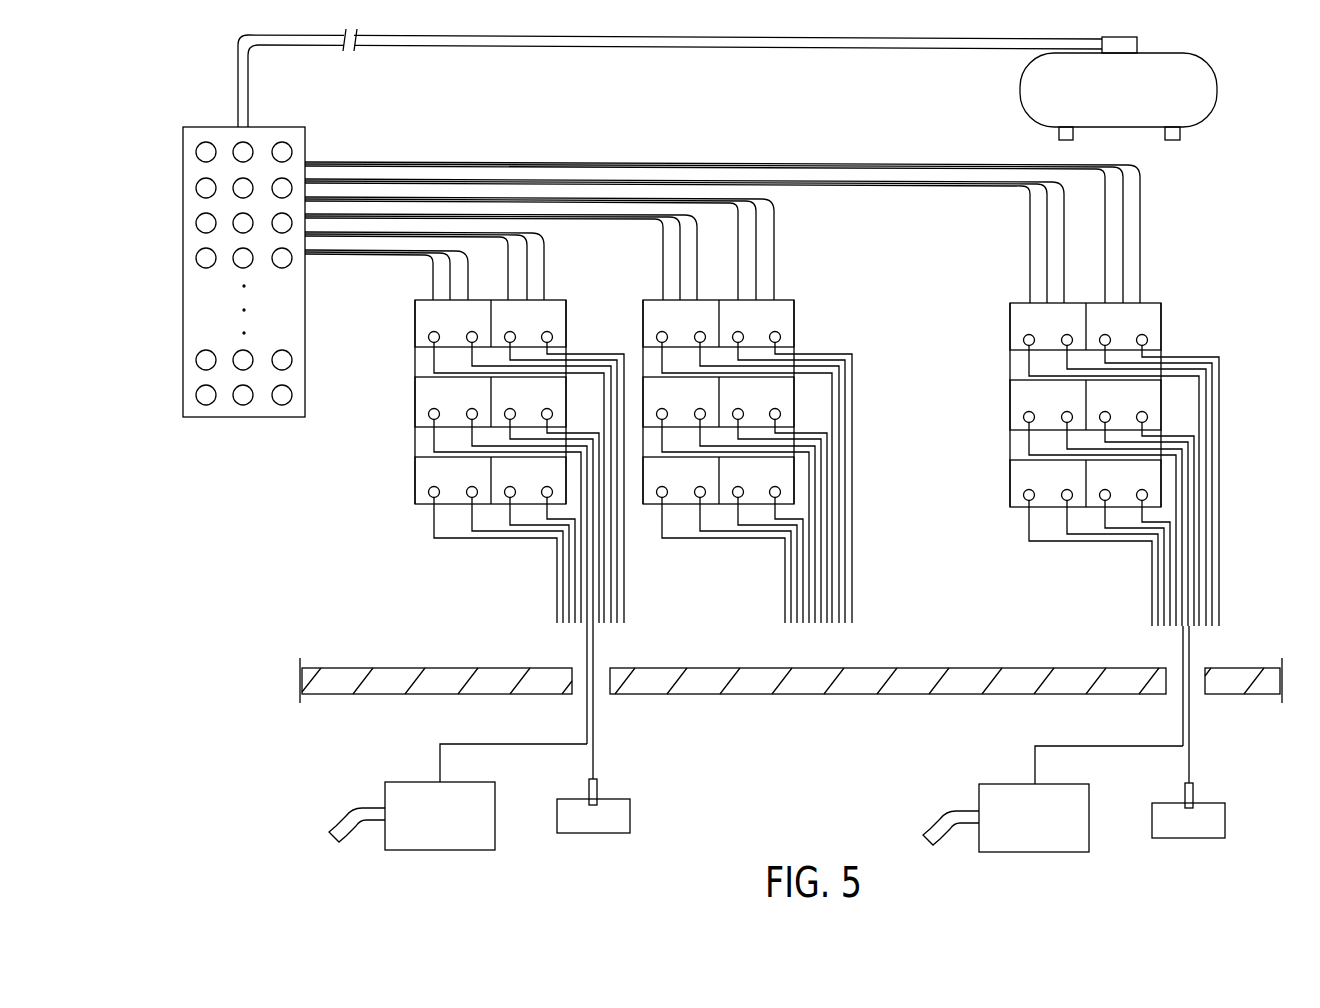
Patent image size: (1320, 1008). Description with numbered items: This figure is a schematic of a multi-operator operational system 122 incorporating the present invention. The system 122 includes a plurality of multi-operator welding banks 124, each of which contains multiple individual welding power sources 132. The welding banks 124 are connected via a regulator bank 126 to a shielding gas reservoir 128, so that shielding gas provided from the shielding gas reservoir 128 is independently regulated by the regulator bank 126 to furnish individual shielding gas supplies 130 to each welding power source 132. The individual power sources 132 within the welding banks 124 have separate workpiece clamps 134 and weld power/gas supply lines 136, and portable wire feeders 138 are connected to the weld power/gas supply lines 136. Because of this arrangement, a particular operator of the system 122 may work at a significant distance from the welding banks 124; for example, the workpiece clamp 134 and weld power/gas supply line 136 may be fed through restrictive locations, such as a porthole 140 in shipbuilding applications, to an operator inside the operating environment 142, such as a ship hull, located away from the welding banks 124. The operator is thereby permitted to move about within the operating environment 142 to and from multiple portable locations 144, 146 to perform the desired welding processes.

The multi-operator operational system 122 is at (1264, 357).
The multi-operator welding bank 124 is at (582, 347).
The regulator bank 126 is at (183, 273).
The shielding gas reservoir 128 is at (1217, 93).
The shielding gas supply 130 is at (450, 285).
The welding power source 132 is at (553, 310).
The workpiece clamp 134 is at (600, 792).
The weld power/gas supply line 136 is at (480, 743).
The portable wire feeder 138 is at (473, 849).
The porthole 140 is at (607, 661).
The operating environment 142 is at (851, 756).
The portable location 144 is at (633, 857).
The portable location 146 is at (1227, 857).